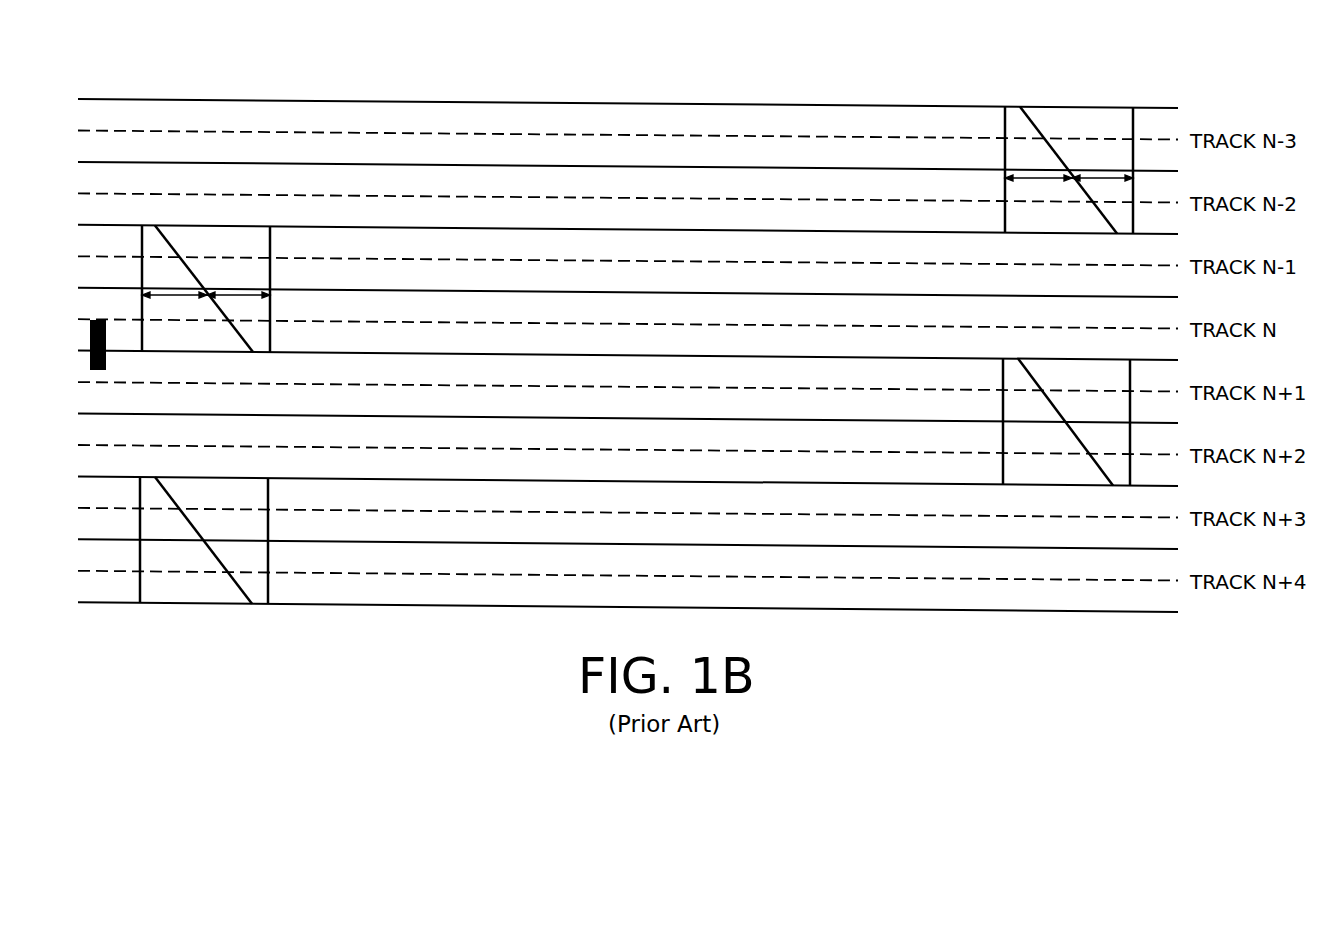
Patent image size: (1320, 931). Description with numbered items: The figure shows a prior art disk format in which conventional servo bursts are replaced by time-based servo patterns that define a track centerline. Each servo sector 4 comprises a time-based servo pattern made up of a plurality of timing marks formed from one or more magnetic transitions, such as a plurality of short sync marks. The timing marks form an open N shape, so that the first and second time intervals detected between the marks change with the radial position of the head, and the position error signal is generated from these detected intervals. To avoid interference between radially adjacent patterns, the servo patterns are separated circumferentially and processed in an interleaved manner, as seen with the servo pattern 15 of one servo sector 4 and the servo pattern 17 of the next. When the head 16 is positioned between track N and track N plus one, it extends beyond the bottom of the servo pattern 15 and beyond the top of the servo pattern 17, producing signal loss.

The servo sector 4 is at (272, 81).
The servo pattern 15 is at (277, 351).
The head 16 is at (90, 363).
The servo pattern 17 is at (1000, 485).